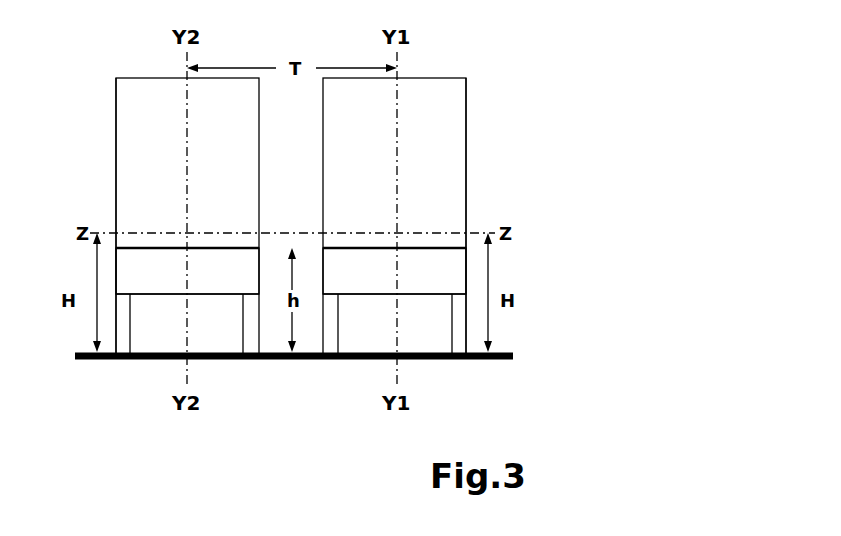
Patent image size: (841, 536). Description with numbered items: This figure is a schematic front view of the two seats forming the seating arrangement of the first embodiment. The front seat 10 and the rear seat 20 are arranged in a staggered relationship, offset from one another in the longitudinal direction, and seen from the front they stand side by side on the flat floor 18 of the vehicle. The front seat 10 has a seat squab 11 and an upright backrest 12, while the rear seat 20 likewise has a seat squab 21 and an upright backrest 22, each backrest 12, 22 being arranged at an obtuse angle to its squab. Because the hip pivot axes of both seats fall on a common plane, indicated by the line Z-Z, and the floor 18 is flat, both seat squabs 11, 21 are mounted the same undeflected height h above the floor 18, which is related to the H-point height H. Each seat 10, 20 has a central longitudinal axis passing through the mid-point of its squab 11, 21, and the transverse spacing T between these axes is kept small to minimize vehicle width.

The front seat 10 is at (462, 216).
The seat squab 11 is at (412, 279).
The backrest 12 is at (466, 173).
The floor 18 is at (500, 352).
The rear seat 20 is at (144, 216).
The seat squab 21 is at (200, 279).
The backrest 22 is at (116, 166).